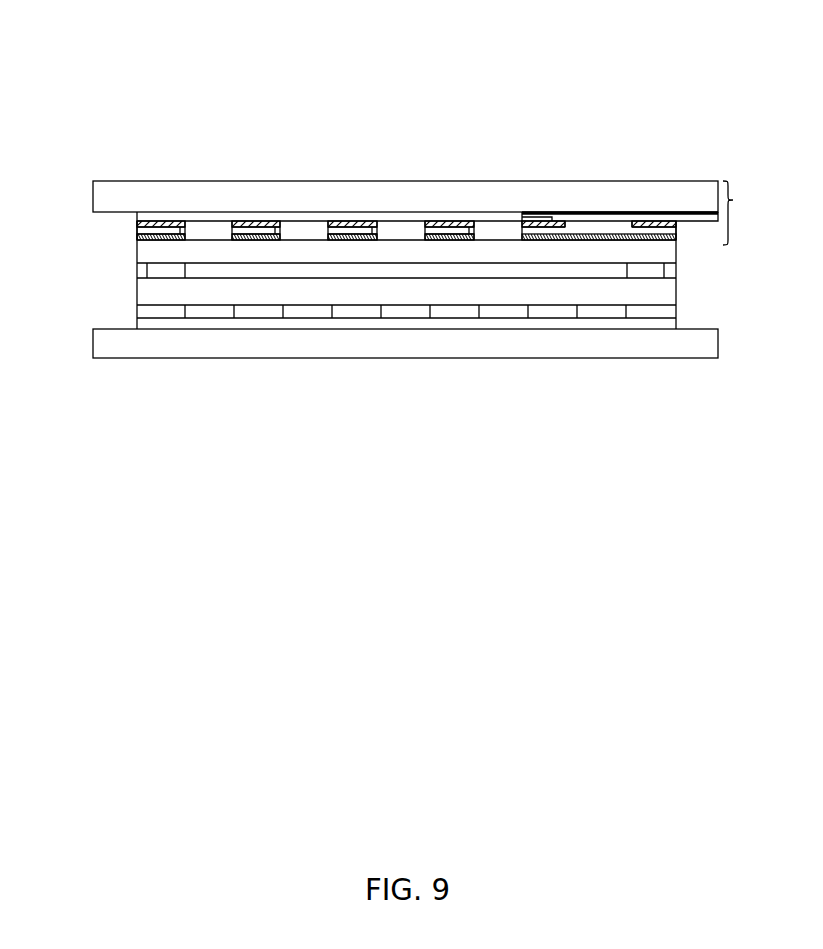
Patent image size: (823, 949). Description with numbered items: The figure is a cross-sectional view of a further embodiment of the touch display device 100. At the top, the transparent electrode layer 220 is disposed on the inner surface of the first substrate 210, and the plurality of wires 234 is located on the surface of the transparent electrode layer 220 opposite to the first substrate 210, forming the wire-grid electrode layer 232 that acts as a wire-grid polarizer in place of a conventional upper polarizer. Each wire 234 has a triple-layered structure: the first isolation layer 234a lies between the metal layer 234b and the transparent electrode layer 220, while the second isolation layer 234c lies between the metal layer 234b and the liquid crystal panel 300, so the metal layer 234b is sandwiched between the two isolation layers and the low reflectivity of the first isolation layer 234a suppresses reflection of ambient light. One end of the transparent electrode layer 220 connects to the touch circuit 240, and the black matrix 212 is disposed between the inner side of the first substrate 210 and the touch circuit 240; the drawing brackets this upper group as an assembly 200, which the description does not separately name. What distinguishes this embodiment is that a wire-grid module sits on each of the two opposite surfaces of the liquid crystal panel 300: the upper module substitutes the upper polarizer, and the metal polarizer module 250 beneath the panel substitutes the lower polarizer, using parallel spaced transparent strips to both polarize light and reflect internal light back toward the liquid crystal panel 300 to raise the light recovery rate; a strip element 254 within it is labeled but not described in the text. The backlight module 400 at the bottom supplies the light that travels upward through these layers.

The touch display device 100 is at (137, 51).
The cover structure 200 is at (746, 213).
The first substrate 210 is at (100, 196).
The black matrix 212 is at (682, 211).
The transparent electrode layer 220 is at (198, 217).
The wire-grid electrode layer 232 is at (137, 227).
The wires 234 is at (371, 146).
The first isolation layer 234a is at (242, 225).
The metal layer 234b is at (268, 230).
The second isolation layer 234c is at (278, 228).
The touch circuit 240 is at (603, 220).
The metal polarizer module 250 is at (137, 303).
The pixel unit 254 is at (257, 310).
The liquid crystal panel 300 is at (137, 243).
The backlight module 400 is at (102, 344).